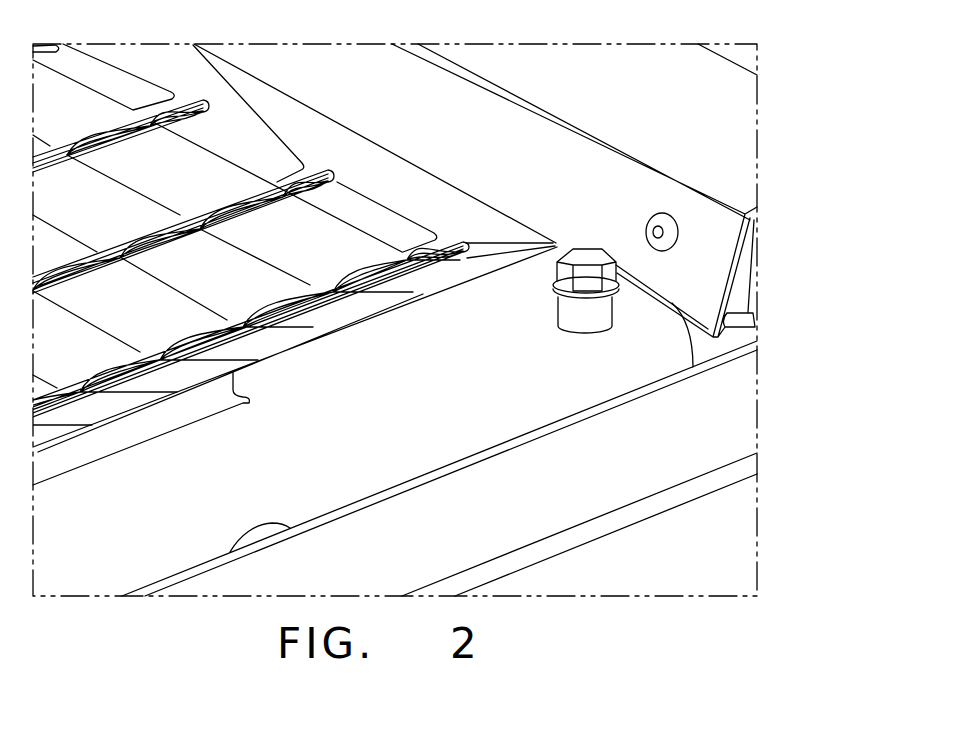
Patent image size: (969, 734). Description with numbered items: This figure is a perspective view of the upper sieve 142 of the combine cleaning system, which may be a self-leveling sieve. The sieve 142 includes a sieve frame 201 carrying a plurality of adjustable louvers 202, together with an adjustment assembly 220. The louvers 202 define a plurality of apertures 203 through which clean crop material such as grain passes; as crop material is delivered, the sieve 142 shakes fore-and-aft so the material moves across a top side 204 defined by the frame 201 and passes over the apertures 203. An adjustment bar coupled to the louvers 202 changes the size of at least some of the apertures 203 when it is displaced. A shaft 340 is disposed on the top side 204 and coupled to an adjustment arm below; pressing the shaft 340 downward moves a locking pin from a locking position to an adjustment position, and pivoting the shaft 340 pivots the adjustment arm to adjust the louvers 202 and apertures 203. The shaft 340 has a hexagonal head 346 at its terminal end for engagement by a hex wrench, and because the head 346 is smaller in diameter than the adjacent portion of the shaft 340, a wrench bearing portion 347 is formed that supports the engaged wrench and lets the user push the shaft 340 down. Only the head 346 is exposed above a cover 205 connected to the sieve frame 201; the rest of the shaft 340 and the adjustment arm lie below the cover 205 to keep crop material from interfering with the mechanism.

The upper sieve 142 is at (770, 107).
The sieve frame 201 is at (732, 400).
The adjustable louvers 202 is at (255, 116).
The apertures 203 is at (320, 155).
The top side 204 is at (462, 322).
The cover 205 is at (385, 398).
The adjustment assembly 220 is at (588, 227).
The shaft 340 is at (584, 322).
The head 346 is at (599, 257).
The wrench bearing portion 347 is at (618, 289).